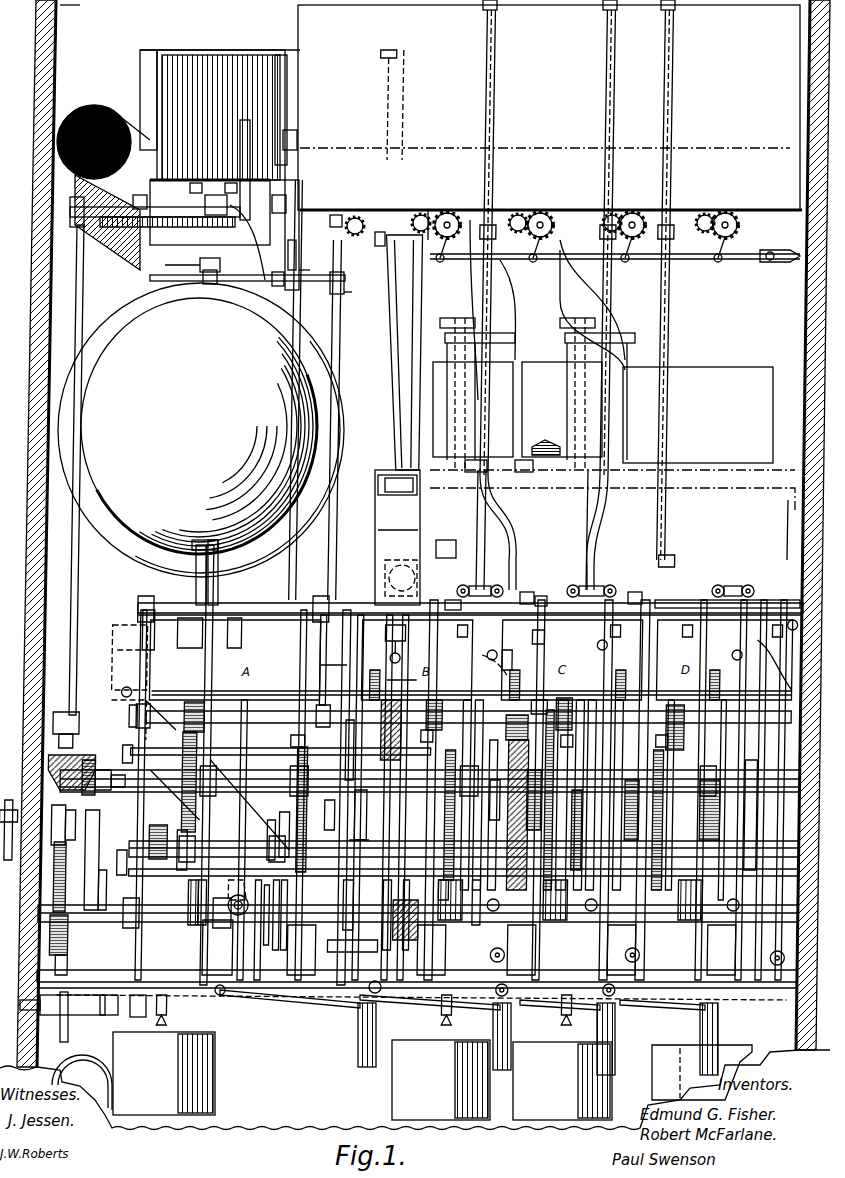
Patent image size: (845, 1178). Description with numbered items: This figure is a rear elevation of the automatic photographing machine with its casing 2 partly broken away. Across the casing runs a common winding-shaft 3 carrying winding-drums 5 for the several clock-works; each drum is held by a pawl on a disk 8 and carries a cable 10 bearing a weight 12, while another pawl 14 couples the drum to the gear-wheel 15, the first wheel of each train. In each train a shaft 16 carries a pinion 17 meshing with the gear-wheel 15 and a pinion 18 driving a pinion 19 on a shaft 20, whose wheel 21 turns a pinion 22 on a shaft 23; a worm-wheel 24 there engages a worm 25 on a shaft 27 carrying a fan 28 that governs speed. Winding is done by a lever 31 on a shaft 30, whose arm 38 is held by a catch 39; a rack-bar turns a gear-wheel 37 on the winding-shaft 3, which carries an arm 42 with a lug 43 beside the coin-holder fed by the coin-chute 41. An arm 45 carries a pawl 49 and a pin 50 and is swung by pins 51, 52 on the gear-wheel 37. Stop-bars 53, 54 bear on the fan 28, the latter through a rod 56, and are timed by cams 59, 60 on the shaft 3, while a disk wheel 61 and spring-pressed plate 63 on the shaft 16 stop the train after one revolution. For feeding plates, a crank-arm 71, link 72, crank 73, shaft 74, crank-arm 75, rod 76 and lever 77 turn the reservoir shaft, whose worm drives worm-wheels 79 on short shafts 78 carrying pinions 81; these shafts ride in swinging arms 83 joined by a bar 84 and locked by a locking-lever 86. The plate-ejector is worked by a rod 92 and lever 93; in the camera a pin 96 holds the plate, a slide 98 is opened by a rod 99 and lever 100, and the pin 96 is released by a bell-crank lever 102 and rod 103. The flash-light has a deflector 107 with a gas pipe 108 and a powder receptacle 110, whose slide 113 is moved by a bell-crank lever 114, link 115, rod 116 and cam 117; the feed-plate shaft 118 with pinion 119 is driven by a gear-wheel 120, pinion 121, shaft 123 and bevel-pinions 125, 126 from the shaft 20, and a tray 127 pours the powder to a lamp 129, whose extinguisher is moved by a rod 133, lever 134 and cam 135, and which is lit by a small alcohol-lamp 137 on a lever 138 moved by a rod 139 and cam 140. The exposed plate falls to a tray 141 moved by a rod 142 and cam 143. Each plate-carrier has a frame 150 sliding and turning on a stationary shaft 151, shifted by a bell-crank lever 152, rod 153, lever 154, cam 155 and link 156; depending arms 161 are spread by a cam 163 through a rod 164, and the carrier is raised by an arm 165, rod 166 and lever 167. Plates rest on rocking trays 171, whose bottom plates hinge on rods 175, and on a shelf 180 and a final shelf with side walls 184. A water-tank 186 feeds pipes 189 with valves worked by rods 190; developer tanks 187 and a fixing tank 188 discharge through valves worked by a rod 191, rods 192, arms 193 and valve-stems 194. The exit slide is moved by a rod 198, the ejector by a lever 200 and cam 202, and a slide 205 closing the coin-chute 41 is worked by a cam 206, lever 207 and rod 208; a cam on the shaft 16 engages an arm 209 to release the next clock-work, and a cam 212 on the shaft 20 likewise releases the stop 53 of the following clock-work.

The frame 2 is at (803, 527).
The shaft 3 is at (225, 922).
The pulley 5 is at (436, 922).
The disk 8 is at (338, 923).
The rod 10 is at (170, 1024).
The weight 12 is at (432, 1076).
The bearing 14 is at (450, 890).
The beam 15 is at (418, 936).
The shaft 16 is at (244, 841).
The gear 17 is at (158, 825).
The gear 18 is at (297, 810).
The collar 19 is at (298, 755).
The shaft 20 is at (240, 792).
The gear 21 is at (197, 738).
The pinion 22 is at (193, 700).
The shaft 23 is at (242, 717).
The pinion 24 is at (544, 677).
The gear 25 is at (535, 728).
The arm 27 is at (352, 917).
The hanger 28 is at (358, 1036).
The bracket 30 is at (62, 1017).
The lever 31 is at (9, 827).
The collar 37 is at (66, 958).
The rod 38 is at (106, 890).
The bar 39 is at (106, 860).
The link 41 is at (169, 795).
The cam 42 is at (238, 902).
The rod 43 is at (383, 915).
The bevel gear 45 is at (72, 772).
The collar 49 is at (82, 787).
The bearing 50 is at (68, 825).
The gear 51 is at (68, 877).
The gear 52 is at (67, 935).
The lever 53 is at (509, 1006).
The lever 54 is at (280, 1003).
The rod 56 is at (253, 928).
The rod 59 is at (270, 922).
The rod 60 is at (249, 930).
The collar 61 is at (269, 840).
The collar 63 is at (274, 829).
The bracket 71 is at (299, 190).
The slide 72 is at (296, 222).
The pin 73 is at (290, 259).
The bar 74 is at (305, 281).
The block 75 is at (344, 285).
The rod 76 is at (340, 340).
The rod 77 is at (343, 750).
The pinion 78 is at (744, 204).
The gear 79 is at (553, 228).
The block 81 is at (374, 245).
The link 83 is at (718, 262).
The bar 84 is at (568, 259).
The handle 86 is at (785, 262).
The plate 92 is at (384, 300).
The rod 93 is at (411, 921).
The frame 96 is at (376, 520).
The block 98 is at (397, 644).
The bar 99 is at (404, 687).
The gear 100 is at (400, 920).
The block 102 is at (414, 500).
The bar 103 is at (379, 537).
The drum 107 is at (201, 430).
The roller 108 is at (104, 108).
The cylinder 110 is at (205, 62).
The base 113 is at (200, 190).
The bracket 114 is at (290, 135).
The block 115 is at (444, 555).
The rod 116 is at (300, 318).
The collar 117 is at (338, 816).
The block 118 is at (235, 237).
The rod 119 is at (212, 228).
The chain bar 120 is at (165, 230).
The bracket 121 is at (90, 228).
The rod 123 is at (84, 300).
The bearing 125 is at (84, 755).
The gear 126 is at (77, 777).
The block 127 is at (192, 264).
The support 129 is at (198, 572).
The rod 133 is at (208, 660).
The cam 134 is at (226, 887).
The link 135 is at (215, 830).
The rod 137 is at (220, 596).
The block 138 is at (240, 642).
The frame 139 is at (178, 652).
The collar 140 is at (189, 847).
The disk 141 is at (384, 573).
The bar 142 is at (340, 666).
The collar 143 is at (360, 836).
The bracket 150 is at (586, 580).
The block 151 is at (445, 602).
The pin 152 is at (650, 621).
The block 153 is at (585, 592).
The pivot 154 is at (603, 896).
The rod 155 is at (394, 872).
The pivot 156 is at (626, 967).
The roller 161 is at (613, 578).
The block 163 is at (630, 728).
The pivot 164 is at (599, 646).
The lever 165 is at (514, 671).
The spring 166 is at (583, 666).
The block 167 is at (546, 710).
The bar 171 is at (727, 597).
The gear 175 is at (502, 802).
The block 180 is at (546, 638).
The collar 184 is at (364, 815).
The casing 186 is at (550, 107).
The box 187 is at (553, 478).
The box 188 is at (698, 415).
The tube 189 is at (533, 528).
The rod 190 is at (404, 95).
The rod 191 is at (519, 530).
The rod 192 is at (512, 394).
The bracket 193 is at (536, 322).
The bar 194 is at (553, 401).
The gear 198 is at (697, 810).
The link 200 is at (781, 657).
The bar 202 is at (742, 815).
The lever 205 is at (123, 687).
The block 206 is at (111, 790).
The pin 207 is at (122, 750).
The link 208 is at (127, 713).
The block 209 is at (433, 737).
The gear 212 is at (587, 805).